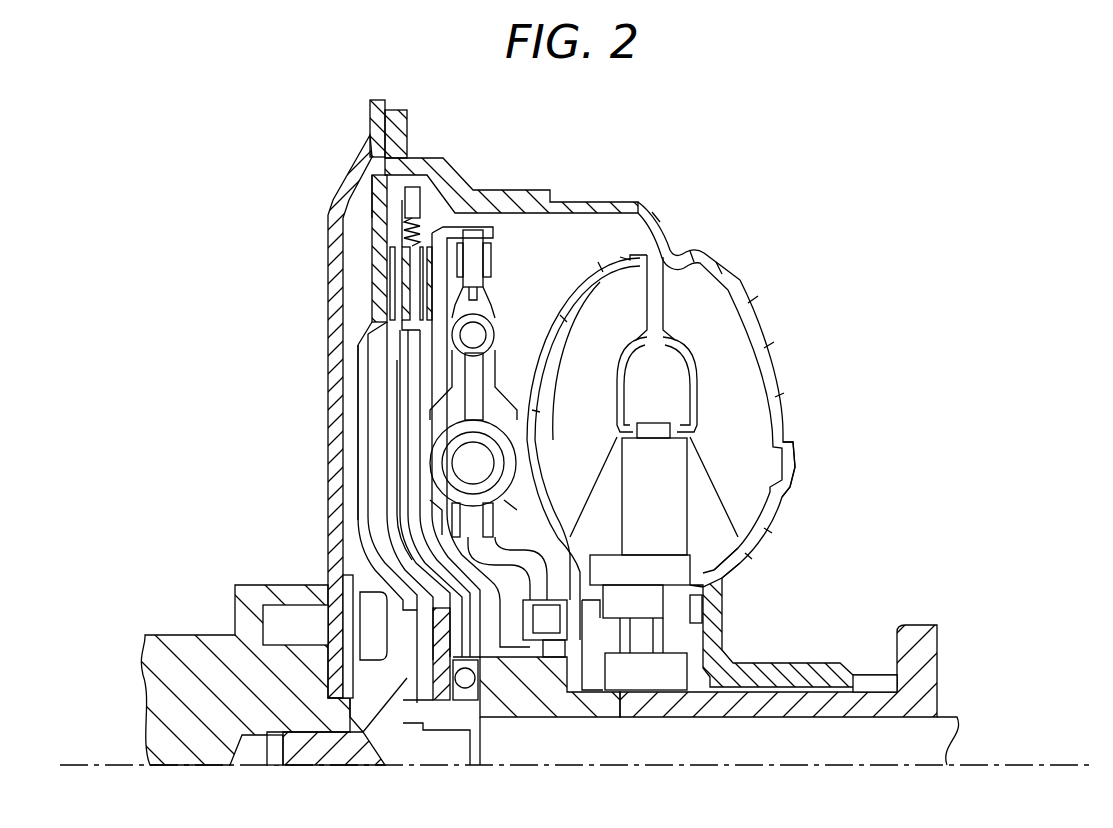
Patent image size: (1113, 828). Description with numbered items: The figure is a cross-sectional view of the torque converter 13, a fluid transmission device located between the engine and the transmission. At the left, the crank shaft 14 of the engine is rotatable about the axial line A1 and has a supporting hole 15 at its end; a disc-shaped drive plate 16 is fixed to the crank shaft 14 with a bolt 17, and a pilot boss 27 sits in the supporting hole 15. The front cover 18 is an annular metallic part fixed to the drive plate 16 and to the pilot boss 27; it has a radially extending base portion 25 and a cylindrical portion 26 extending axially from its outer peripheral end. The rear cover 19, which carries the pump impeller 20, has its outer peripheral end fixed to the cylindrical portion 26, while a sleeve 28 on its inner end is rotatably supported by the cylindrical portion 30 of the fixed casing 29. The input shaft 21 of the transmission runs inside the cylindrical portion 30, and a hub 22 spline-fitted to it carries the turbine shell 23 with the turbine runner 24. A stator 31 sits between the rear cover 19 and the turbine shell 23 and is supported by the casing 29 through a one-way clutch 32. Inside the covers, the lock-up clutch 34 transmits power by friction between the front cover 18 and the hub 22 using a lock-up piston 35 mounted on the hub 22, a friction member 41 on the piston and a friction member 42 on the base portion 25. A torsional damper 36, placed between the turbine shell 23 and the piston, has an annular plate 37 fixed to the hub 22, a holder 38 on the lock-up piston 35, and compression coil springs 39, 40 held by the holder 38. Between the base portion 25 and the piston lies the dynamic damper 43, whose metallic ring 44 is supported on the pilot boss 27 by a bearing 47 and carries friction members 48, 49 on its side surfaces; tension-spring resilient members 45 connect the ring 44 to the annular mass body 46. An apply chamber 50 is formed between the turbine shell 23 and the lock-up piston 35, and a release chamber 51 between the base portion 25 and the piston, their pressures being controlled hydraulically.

The torque converter 13 is at (765, 242).
The crank shaft 14 is at (178, 648).
The supporting hole 15 is at (265, 752).
The drive plate 16 is at (336, 392).
The bolt 17 is at (280, 612).
The front cover 18 is at (493, 190).
The rear cover 19 is at (777, 419).
The pump impeller 20 is at (747, 394).
The input shaft 21 is at (693, 750).
The hub 22 is at (520, 705).
The turbine shell 23 is at (577, 300).
The turbine runner 24 is at (633, 318).
The base portion 25 is at (367, 415).
The cylindrical portion 26 is at (537, 190).
The pilot boss 27 is at (318, 752).
The sleeve 28 is at (875, 680).
The casing 29 is at (940, 643).
The cylindrical portion 30 is at (830, 705).
The stator 31 is at (668, 465).
The one-way clutch 32 is at (683, 642).
The lock-up clutch 34 is at (442, 222).
The lock-up piston 35 is at (418, 463).
The torsional damper 36 is at (630, 340).
The annular plate 37 is at (713, 567).
The holder 38 is at (447, 373).
The compression coil spring 39 is at (540, 330).
The compression coil spring 40 is at (440, 481).
The friction member 41 is at (400, 300).
The friction member 42 is at (407, 250).
The dynamic damper 43 is at (405, 225).
The ring 44 is at (393, 440).
The resilient member 45 is at (398, 236).
The mass body 46 is at (412, 215).
The bearing 47 is at (458, 705).
The friction member 48 is at (390, 267).
The friction member 49 is at (393, 278).
The apply chamber 50 is at (512, 300).
The release chamber 51 is at (417, 333).
The axial line A1 is at (1086, 762).